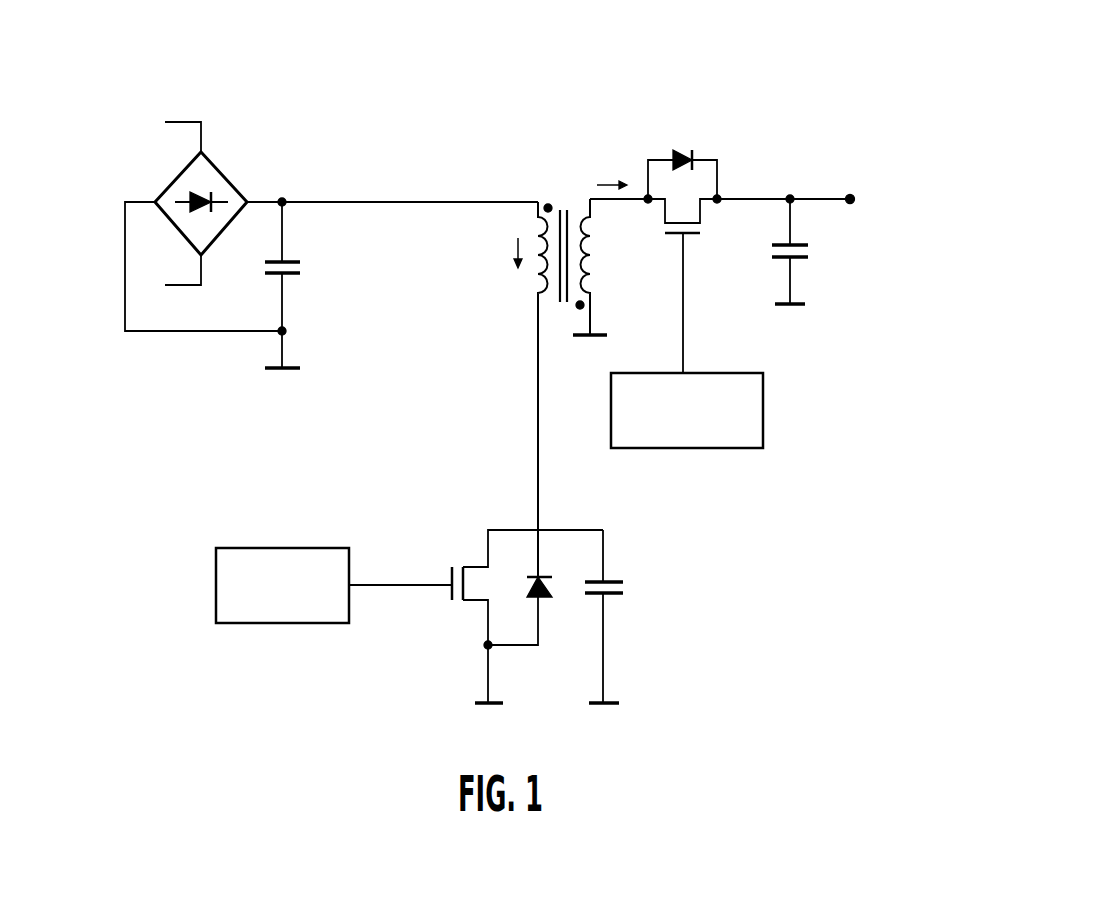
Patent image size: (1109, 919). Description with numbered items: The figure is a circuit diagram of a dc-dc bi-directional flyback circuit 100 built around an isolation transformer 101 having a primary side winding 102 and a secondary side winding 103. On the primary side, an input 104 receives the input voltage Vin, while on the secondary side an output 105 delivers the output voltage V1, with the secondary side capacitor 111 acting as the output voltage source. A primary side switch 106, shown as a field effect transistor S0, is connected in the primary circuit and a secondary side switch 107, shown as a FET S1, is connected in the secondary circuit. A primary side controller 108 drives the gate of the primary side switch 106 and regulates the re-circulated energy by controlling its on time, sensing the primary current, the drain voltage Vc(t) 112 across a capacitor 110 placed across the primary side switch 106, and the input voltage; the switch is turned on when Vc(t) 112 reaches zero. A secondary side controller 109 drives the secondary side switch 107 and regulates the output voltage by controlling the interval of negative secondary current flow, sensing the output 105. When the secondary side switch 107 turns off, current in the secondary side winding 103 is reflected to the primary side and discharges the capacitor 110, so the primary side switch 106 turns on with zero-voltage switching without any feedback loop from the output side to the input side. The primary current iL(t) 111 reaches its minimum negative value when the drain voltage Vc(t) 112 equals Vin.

The dc-dc bi-directional flyback circuit 100 is at (825, 32).
The isolation transformer 101 is at (566, 200).
The primary side winding 102 is at (527, 280).
The secondary side winding 103 is at (585, 265).
The input 104 is at (340, 258).
The output 105 is at (847, 195).
The primary side switch 106 is at (473, 615).
The secondary side switch 107 is at (743, 155).
The primary side controller 108 is at (268, 623).
The secondary side controller 109 is at (763, 420).
The capacitor 110 is at (610, 578).
The secondary side capacitor 111 is at (470, 270).
The drain voltage Vc(t) 112 is at (680, 590).